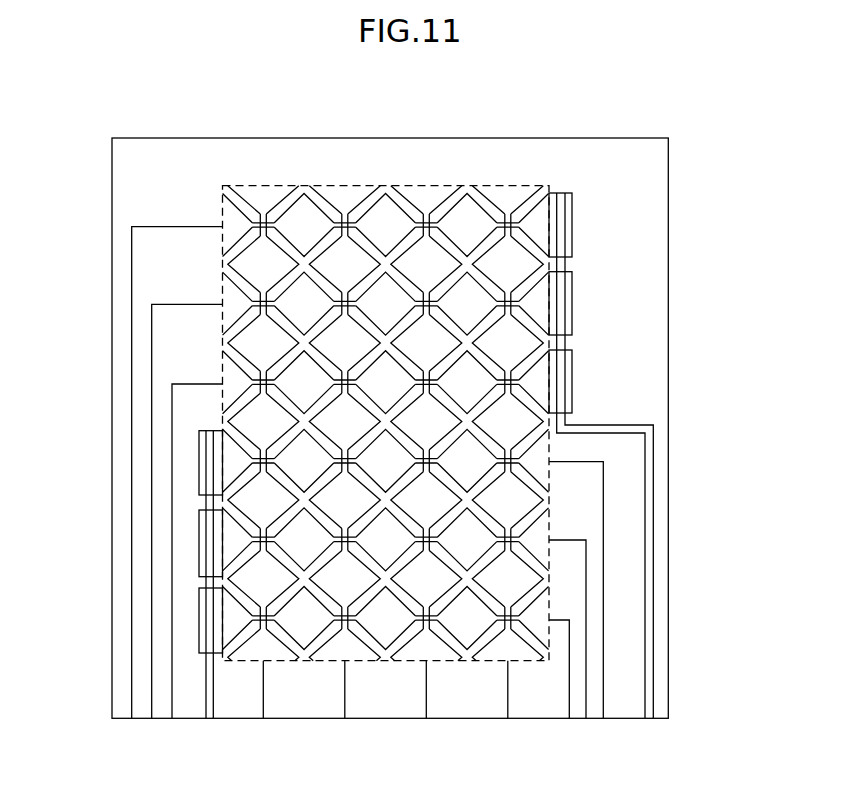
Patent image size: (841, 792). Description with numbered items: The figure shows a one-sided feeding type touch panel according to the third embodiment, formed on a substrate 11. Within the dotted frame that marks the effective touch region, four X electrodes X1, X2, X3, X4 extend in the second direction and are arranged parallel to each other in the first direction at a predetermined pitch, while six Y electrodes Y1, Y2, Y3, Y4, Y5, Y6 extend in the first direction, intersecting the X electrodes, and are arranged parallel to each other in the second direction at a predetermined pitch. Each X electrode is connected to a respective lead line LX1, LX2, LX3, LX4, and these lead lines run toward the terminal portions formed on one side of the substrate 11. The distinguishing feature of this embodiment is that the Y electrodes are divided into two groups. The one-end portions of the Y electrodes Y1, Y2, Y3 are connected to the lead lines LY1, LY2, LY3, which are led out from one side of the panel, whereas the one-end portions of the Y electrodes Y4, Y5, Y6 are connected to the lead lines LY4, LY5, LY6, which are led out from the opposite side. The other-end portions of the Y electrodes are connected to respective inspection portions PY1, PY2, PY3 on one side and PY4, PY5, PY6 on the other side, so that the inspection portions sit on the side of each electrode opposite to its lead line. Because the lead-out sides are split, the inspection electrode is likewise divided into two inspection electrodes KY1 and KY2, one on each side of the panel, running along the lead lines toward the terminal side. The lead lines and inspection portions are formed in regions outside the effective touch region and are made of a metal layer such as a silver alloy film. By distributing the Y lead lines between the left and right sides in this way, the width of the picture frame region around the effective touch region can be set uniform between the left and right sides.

The substrate 11 is at (147, 168).
The X electrode X1 is at (270, 193).
The X electrode X2 is at (347, 193).
The X electrode X3 is at (425, 193).
The X electrode X4 is at (509, 193).
The Y electrode Y1 is at (542, 608).
The Y electrode Y2 is at (542, 533).
The Y electrode Y3 is at (542, 452).
The Y electrode Y4 is at (542, 370).
The Y electrode Y5 is at (542, 293).
The Y electrode Y6 is at (542, 218).
The lead line LX1 is at (265, 668).
The lead line LX2 is at (347, 668).
The lead line LX3 is at (428, 668).
The lead line LX4 is at (510, 668).
The lead line LY1 is at (571, 642).
The lead line LY2 is at (588, 562).
The lead line LY3 is at (605, 492).
The lead line LY4 is at (172, 398).
The lead line LY5 is at (152, 326).
The lead line LY6 is at (131, 247).
The inspection portion PY1 is at (201, 617).
The inspection portion PY2 is at (201, 540).
The inspection portion PY3 is at (201, 462).
The inspection portion PY4 is at (568, 383).
The inspection portion PY5 is at (568, 305).
The inspection portion PY6 is at (568, 230).
The inspection electrode KY1 is at (210, 683).
The inspection electrode KY2 is at (648, 683).